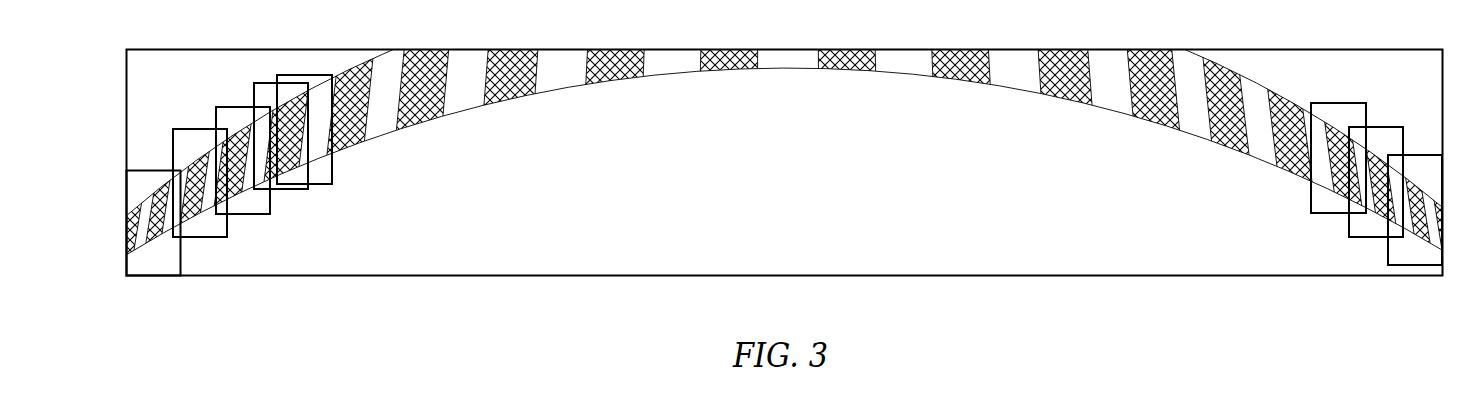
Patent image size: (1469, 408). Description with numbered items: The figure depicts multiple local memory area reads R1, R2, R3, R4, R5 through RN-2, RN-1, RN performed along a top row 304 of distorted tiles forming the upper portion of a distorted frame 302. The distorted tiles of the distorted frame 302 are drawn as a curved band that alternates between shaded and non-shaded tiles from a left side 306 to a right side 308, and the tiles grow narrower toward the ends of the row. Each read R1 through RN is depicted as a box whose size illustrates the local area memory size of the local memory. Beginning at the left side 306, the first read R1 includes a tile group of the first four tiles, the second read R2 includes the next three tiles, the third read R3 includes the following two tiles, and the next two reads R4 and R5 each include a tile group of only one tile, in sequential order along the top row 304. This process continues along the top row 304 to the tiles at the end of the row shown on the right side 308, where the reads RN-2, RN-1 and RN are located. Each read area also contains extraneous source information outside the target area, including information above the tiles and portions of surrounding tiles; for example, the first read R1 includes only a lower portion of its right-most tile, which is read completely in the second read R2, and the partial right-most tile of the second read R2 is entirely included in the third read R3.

The distorted frame 302 is at (488, 276).
The top row 304 is at (782, 72).
The left side 306 is at (268, 299).
The right side 308 is at (1312, 303).
The first read R1 is at (154, 211).
The second read R2 is at (200, 171).
The third read R3 is at (243, 149).
The fourth read R4 is at (278, 125).
The fifth read R5 is at (304, 118).
The local memory area read RN-2 is at (1336, 143).
The local memory area read RN-1 is at (1383, 169).
The last read RN is at (1415, 197).